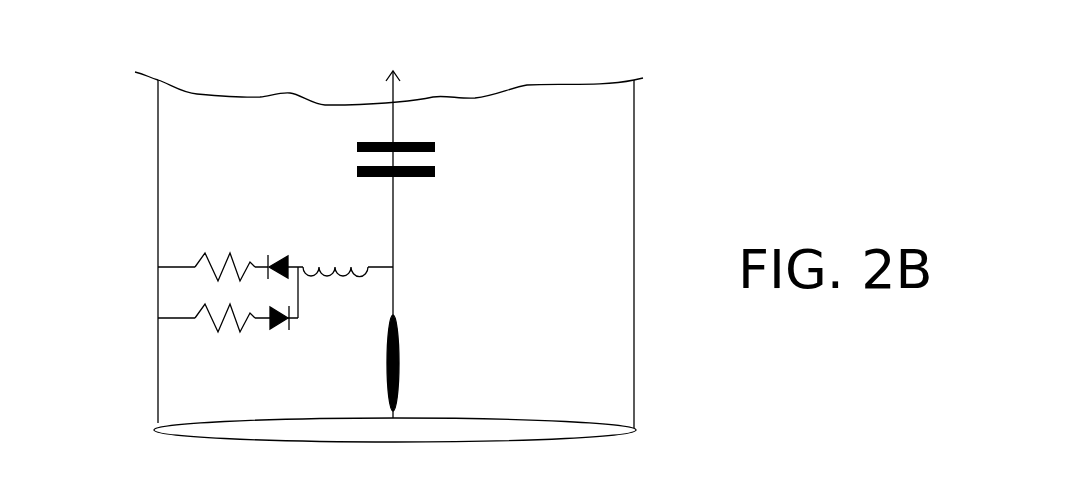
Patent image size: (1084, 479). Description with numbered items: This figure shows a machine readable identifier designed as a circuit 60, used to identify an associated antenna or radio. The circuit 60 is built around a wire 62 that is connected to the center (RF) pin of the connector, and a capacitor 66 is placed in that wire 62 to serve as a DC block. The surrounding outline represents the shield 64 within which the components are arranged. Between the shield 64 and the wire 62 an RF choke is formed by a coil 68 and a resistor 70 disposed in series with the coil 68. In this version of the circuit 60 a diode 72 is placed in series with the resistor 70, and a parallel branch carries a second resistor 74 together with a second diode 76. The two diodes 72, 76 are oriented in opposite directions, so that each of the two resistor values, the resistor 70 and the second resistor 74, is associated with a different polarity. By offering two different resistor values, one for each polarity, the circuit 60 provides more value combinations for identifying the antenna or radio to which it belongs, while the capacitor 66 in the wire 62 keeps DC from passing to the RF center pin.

The circuit 60 is at (732, 155).
The wire 62 is at (393, 225).
The shield 64 is at (157, 223).
The capacitor 66 is at (420, 140).
The inductor 68 is at (338, 263).
The resistor 70 is at (228, 253).
The diode 72 is at (281, 257).
The second resistor 74 is at (212, 323).
The diode 76 is at (273, 315).